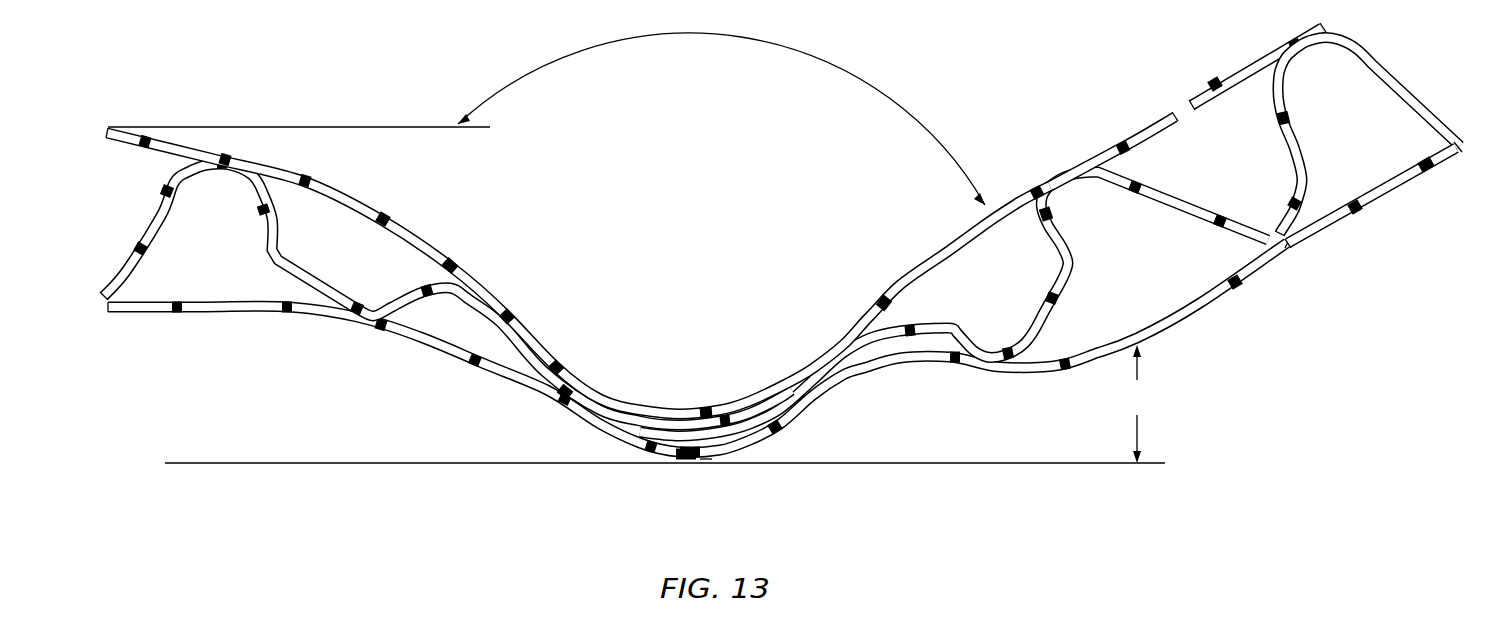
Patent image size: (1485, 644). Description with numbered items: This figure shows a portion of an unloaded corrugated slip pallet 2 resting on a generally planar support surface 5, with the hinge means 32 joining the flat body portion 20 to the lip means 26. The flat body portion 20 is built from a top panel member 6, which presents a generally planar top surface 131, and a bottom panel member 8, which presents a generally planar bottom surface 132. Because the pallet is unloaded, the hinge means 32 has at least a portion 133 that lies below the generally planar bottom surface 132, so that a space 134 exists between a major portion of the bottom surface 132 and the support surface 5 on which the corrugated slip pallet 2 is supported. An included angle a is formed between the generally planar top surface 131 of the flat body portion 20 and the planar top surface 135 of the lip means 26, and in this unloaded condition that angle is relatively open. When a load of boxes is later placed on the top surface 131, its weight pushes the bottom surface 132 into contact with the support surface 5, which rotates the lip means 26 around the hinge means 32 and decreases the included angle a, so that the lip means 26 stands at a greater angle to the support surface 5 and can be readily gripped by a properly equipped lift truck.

The corrugated slip pallet 2 is at (781, 307).
The base plane 5 is at (245, 464).
The top panel member 6 is at (578, 255).
The bottom panel member 8 is at (699, 345).
The flat body portion 20 is at (695, 236).
The lip means 26 is at (1247, 208).
The hinge means 32 is at (685, 469).
The generally planar top surface 131 is at (160, 135).
The generally planar bottom surface 132 is at (149, 310).
The portion of the hinge means 133 is at (707, 460).
The space 134 is at (318, 393).
The planar top surface of the lip means 135 is at (1110, 148).
The included angle a is at (734, 124).